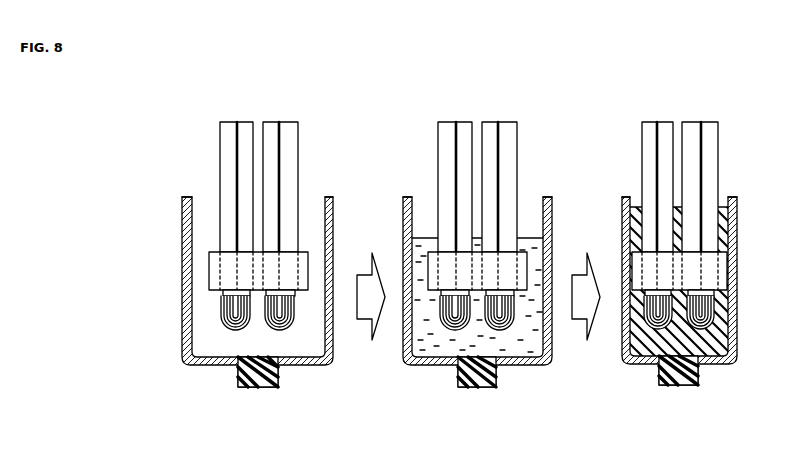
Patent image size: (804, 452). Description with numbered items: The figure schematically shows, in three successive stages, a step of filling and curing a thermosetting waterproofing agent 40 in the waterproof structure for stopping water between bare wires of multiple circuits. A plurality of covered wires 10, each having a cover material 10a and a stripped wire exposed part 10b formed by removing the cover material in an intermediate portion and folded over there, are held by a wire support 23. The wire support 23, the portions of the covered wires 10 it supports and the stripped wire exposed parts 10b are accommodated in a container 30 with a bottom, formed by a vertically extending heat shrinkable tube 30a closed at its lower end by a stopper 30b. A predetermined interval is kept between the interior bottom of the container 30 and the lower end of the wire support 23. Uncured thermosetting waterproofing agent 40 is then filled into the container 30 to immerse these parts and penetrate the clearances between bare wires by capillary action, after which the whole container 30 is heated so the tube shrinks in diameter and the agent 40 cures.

The covered wire 10 is at (468, 187).
The cover material 10a is at (239, 156).
The stripped wire exposed part 10b is at (235, 331).
The wire support 23 is at (203, 276).
The container 30 is at (441, 309).
The heat shrinkable tube 30a is at (183, 213).
The stopper 30b is at (255, 388).
The thermosetting waterproofing agent 40 is at (538, 364).